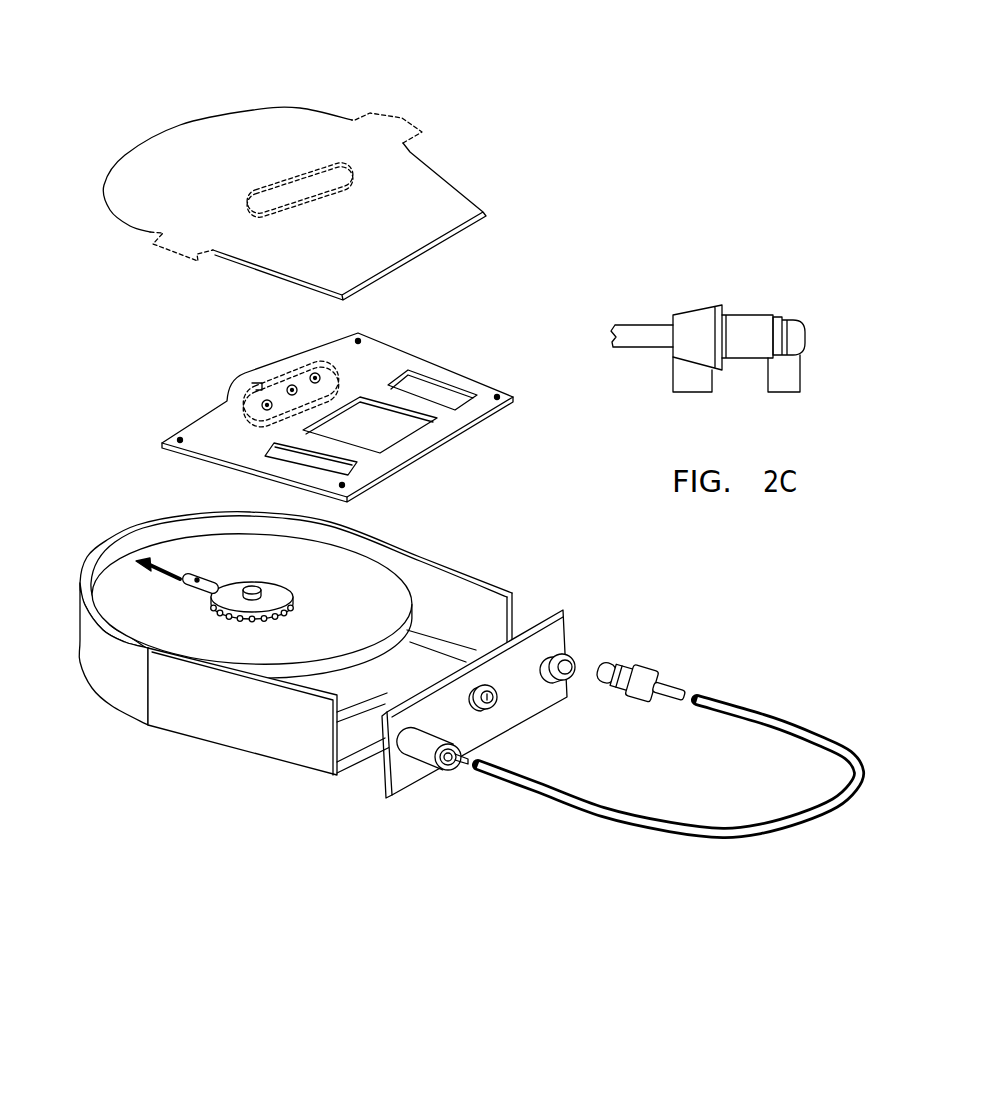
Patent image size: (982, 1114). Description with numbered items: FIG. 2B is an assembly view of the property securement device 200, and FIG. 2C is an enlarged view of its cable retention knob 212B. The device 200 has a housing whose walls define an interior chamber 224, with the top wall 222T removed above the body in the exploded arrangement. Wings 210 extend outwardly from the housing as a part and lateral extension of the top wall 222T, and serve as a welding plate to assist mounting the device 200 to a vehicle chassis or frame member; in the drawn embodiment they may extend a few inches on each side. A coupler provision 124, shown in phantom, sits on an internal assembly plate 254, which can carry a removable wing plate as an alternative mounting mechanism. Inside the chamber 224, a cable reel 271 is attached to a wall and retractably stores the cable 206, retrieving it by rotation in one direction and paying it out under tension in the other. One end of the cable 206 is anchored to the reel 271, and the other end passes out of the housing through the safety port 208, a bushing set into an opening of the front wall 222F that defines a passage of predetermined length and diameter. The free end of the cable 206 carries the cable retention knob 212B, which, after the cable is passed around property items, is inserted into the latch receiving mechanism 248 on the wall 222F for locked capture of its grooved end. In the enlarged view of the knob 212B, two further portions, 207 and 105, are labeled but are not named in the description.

In FIG. 2B, the property securement device 200 is at (150, 70).
In FIG. 2B, the wings 210 is at (402, 120).
In FIG. 2B, the top wall 222T is at (435, 225).
In FIG. 2B, the internal assembly plate 254 is at (400, 362).
In FIG. 2B, the coupler provision 124 is at (297, 378).
In FIG. 2B, the interior chamber 224 is at (360, 641).
In FIG. 2B, the cable reel 271 is at (360, 583).
In FIG. 2B, the wall 222F is at (565, 615).
In FIG. 2B, the latch receiving mechanism 248 is at (563, 697).
In FIG. 2B, the safety port 208 is at (423, 762).
In FIG. 2B, the cable retention knob 212B is at (650, 673).
In FIG. 2C, the cable retention knob 212B is at (737, 178).
In FIG. 2B, the cable 206 is at (772, 720).
In FIG. 2C, the cable 206 is at (638, 332).
In FIG. 2C, the strain relief 207 is at (697, 367).
In FIG. 2C, the plug tip 105 is at (786, 373).